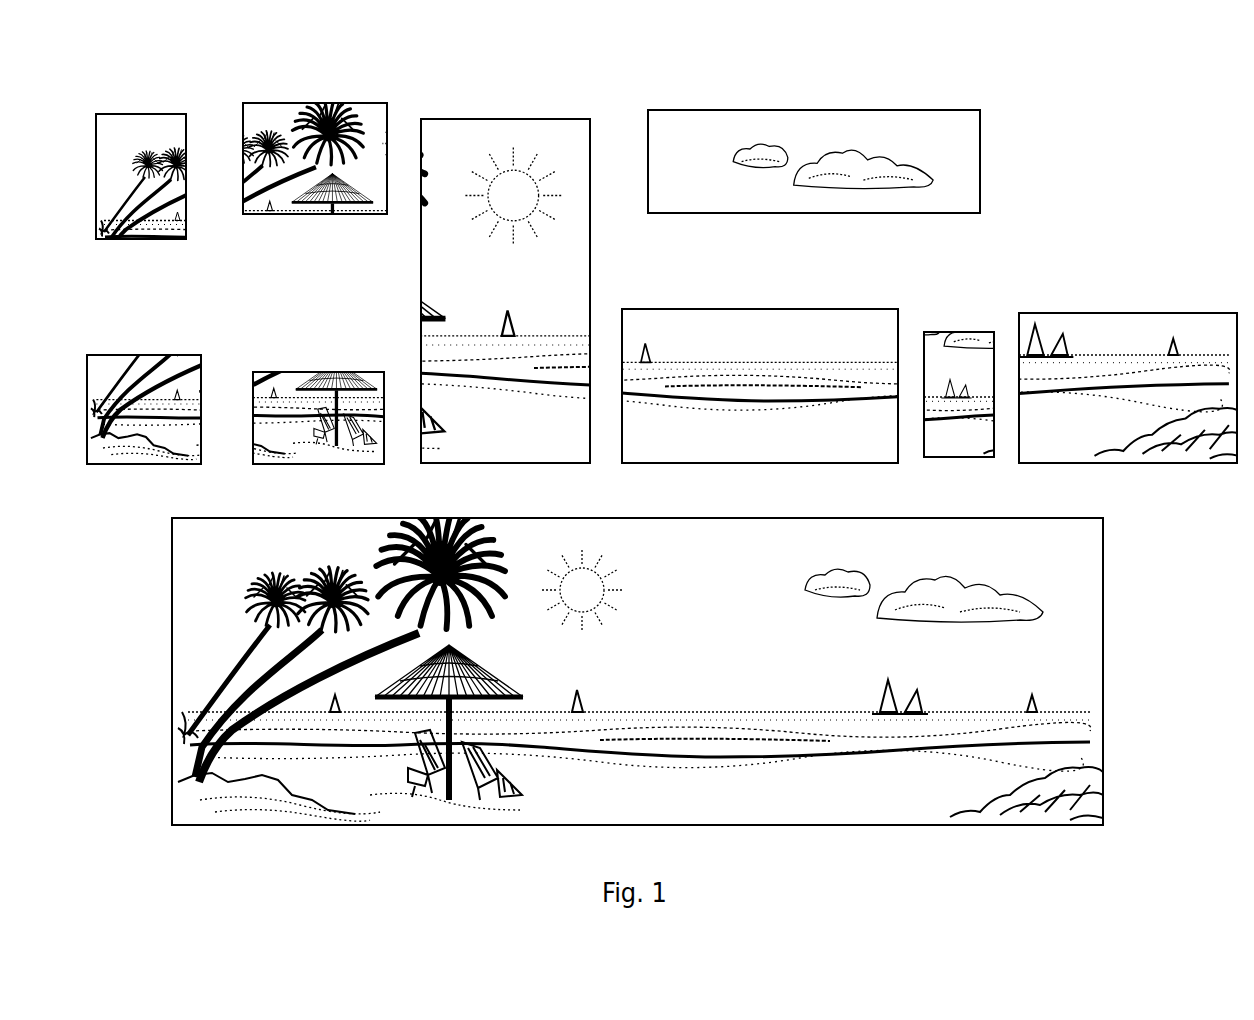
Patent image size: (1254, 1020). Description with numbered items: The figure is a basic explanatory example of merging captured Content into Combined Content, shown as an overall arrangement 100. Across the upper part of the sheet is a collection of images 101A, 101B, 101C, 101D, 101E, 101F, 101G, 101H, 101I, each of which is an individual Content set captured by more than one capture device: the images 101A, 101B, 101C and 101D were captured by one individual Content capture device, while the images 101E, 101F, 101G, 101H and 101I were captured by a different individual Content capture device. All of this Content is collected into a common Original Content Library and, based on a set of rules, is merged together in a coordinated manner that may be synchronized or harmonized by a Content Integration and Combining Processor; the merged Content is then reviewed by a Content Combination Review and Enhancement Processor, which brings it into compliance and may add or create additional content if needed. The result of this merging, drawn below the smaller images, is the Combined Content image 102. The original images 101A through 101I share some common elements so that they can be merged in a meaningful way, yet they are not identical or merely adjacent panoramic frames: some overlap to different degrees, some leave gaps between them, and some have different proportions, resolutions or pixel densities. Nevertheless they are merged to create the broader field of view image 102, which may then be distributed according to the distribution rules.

The image cropping system 100 is at (1092, 155).
The individual Content set 101A is at (141, 114).
The individual Content set 101B is at (116, 354).
The individual Content set 101C is at (328, 103).
The individual Content set 101D is at (343, 371).
The individual Content set 101E is at (521, 110).
The individual Content set 101F is at (848, 103).
The individual Content set 101G is at (779, 308).
The individual Content set 101H is at (983, 331).
The individual Content set 101I is at (1144, 313).
The broader field of view image 102 is at (165, 640).